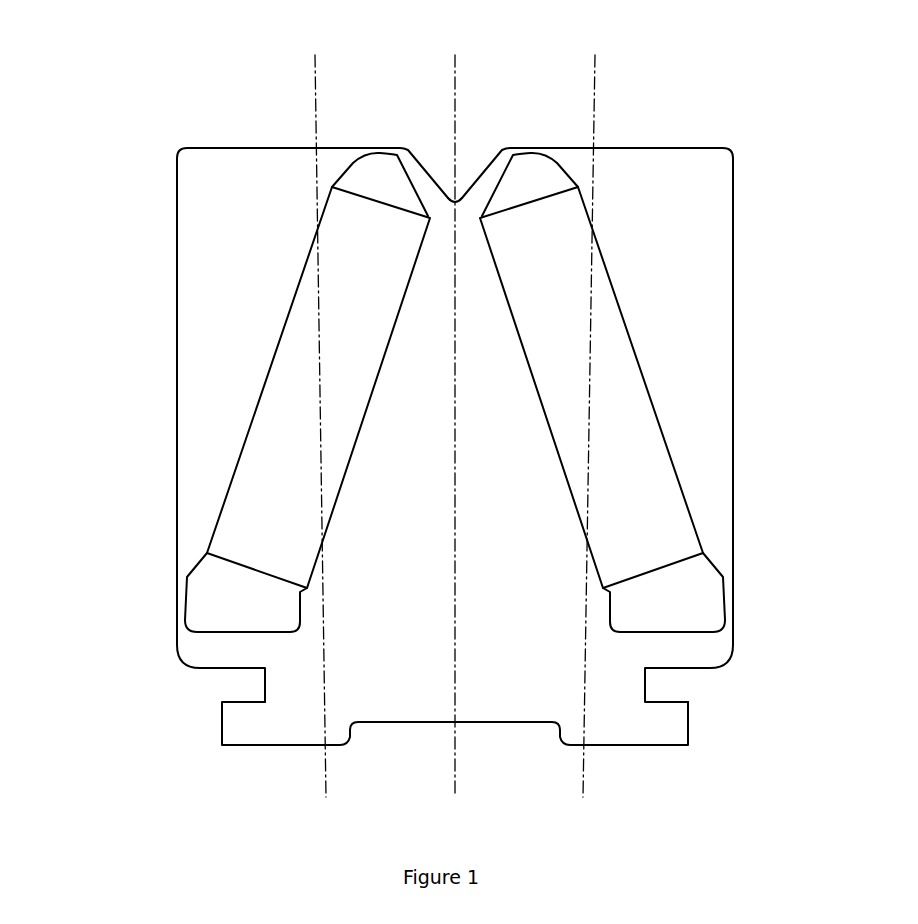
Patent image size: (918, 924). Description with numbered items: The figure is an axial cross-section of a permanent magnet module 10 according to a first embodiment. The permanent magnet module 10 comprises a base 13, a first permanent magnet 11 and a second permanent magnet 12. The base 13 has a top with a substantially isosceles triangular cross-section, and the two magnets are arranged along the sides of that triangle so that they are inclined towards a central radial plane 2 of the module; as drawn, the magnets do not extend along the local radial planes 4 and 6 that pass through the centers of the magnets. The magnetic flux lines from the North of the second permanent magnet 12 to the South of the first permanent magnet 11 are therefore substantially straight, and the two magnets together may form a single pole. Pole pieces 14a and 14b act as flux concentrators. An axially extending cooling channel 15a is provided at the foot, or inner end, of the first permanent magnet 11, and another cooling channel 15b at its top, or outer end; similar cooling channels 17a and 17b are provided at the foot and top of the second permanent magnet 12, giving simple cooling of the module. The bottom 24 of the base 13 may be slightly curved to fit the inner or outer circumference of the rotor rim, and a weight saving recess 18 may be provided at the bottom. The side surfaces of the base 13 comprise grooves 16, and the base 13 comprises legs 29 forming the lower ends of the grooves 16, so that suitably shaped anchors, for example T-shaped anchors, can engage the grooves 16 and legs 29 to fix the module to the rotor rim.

The central radial plane 2 is at (455, 775).
The local radial plane 4 is at (585, 767).
The local radial plane 6 is at (307, 731).
The permanent magnet module 10 is at (128, 421).
The first permanent magnet 11 is at (353, 223).
The second permanent magnet 12 is at (577, 275).
The base 13 is at (443, 567).
The pole piece 14a is at (237, 305).
The pole piece 14b is at (667, 305).
The cooling channel 15a is at (218, 598).
The cooling channel 15b is at (382, 182).
The groove 16 is at (678, 684).
The cooling channel 17a is at (687, 610).
The cooling channel 17b is at (525, 183).
The weight saving recess 18 is at (531, 743).
The bottom of the base 24 is at (297, 746).
The leg 29 is at (267, 740).